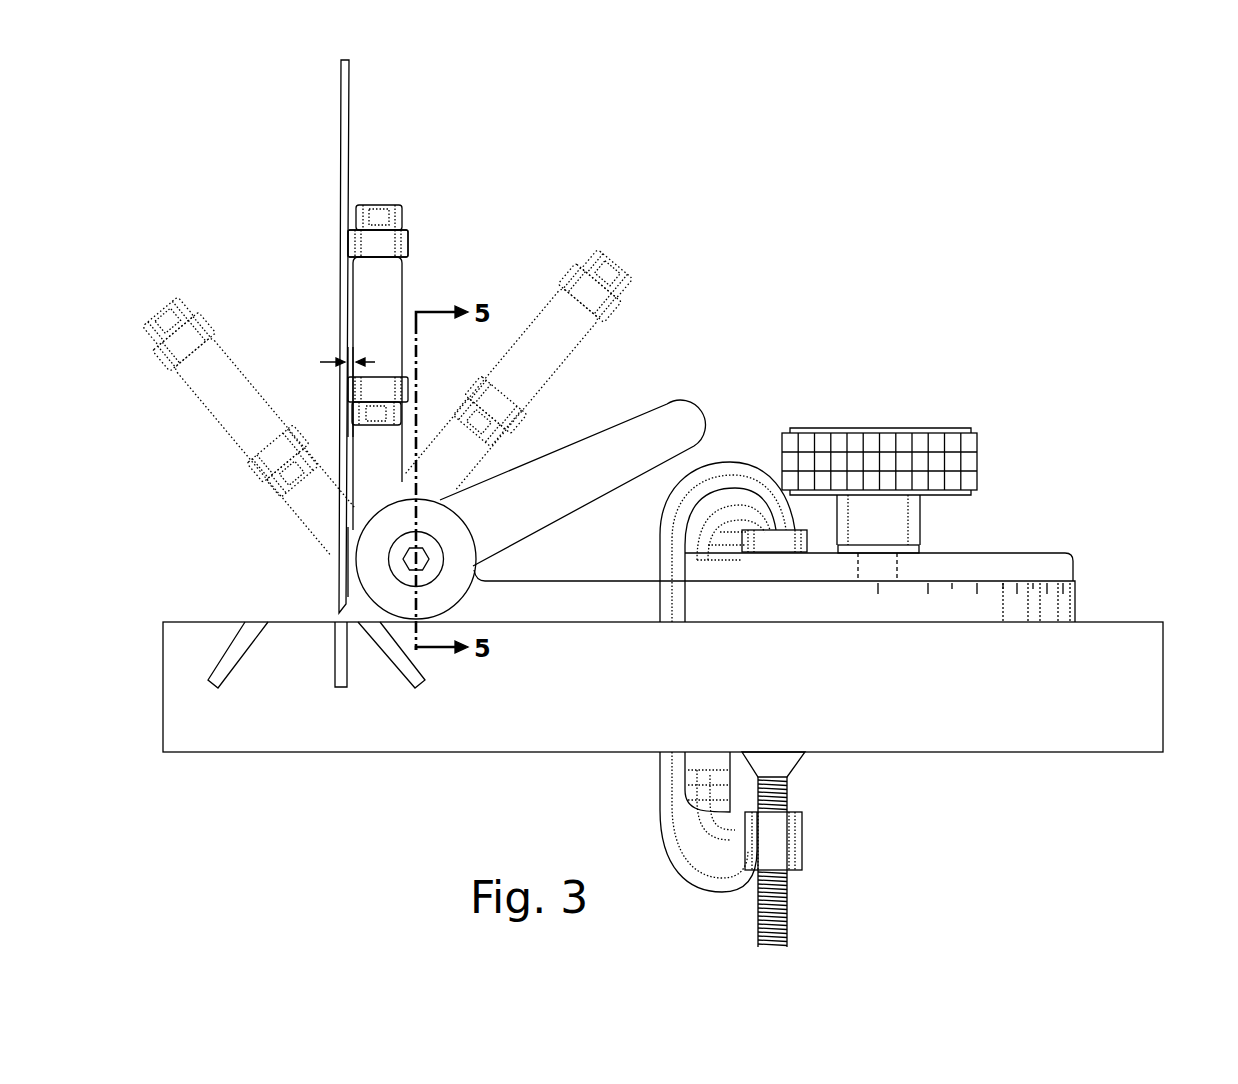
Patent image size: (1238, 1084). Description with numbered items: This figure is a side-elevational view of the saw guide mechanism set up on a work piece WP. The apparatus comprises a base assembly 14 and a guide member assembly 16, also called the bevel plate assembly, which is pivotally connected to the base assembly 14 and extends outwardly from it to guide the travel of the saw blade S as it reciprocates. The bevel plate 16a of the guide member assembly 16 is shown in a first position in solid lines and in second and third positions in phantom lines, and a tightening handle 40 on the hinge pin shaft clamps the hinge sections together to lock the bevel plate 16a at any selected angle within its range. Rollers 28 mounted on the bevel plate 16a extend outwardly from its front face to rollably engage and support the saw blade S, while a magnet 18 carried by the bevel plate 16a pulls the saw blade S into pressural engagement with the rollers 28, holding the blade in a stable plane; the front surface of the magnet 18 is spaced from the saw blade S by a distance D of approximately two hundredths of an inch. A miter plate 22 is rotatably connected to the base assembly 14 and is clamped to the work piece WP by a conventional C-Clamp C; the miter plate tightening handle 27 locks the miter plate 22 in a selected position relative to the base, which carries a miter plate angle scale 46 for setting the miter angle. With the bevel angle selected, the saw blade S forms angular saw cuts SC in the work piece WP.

The base assembly 14 is at (560, 577).
The guide member assembly 16 is at (386, 375).
The bevel plate 16a is at (405, 292).
The magnet 18 is at (340, 347).
The miter plate 22 is at (1020, 567).
The miter plate tightening handle 27 is at (978, 442).
The rollers 28 is at (410, 242).
The tightening handle 40 is at (620, 447).
The miter plate angle scale 46 is at (1077, 607).
The saw blade S is at (340, 140).
The distance D is at (336, 363).
The C-Clamp C is at (802, 837).
The work piece WP is at (1080, 718).
The saw cuts SC is at (228, 677).